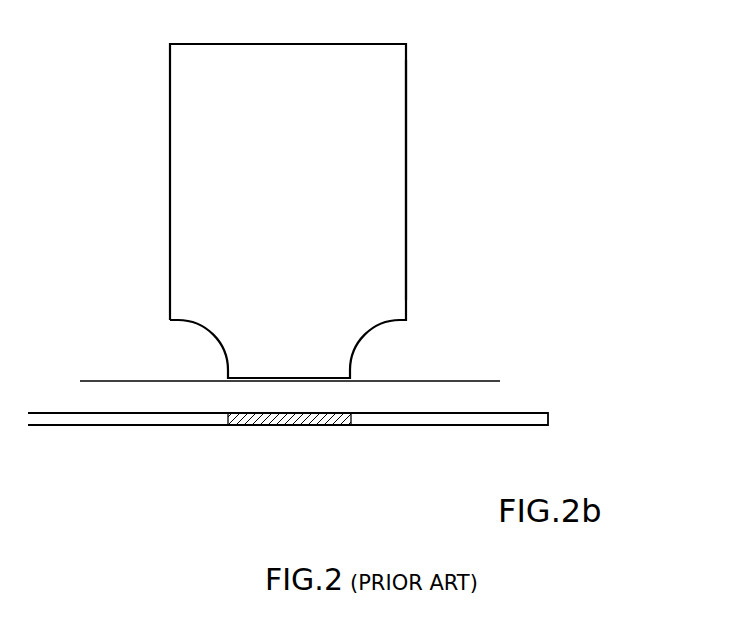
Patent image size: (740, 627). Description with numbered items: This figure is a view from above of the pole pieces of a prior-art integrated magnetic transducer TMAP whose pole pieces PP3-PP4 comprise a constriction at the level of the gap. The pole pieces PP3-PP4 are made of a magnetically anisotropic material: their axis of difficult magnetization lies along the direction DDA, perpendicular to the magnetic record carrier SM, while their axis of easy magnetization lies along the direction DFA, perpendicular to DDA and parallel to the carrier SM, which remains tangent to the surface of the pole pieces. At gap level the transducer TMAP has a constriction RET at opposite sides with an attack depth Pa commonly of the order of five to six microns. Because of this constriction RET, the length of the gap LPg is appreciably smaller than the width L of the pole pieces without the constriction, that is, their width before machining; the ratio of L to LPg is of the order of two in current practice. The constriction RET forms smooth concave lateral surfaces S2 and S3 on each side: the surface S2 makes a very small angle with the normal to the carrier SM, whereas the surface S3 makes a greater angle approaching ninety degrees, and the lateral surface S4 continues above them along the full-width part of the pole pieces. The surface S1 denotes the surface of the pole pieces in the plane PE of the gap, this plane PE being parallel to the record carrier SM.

The integrated magnetic transducer TMAP is at (168, 110).
The pole pieces PP3-PP4 is at (394, 113).
The width of the pole pieces L is at (406, 183).
The direction of difficult magnetization DDA is at (288, 86).
The direction of easy magnetization DFA is at (333, 228).
The lateral surface of the pole pieces S4 is at (177, 253).
The concave lateral surface S3 is at (228, 368).
The concave lateral surface S2 is at (214, 345).
The surface of the pole pieces in the gap plane S1 is at (343, 372).
The constriction RET is at (375, 340).
The plane of the gap PE is at (85, 382).
The attack depth Pa is at (420, 321).
The magnetic record carrier SM is at (522, 424).
The length of the gap LPg is at (228, 378).